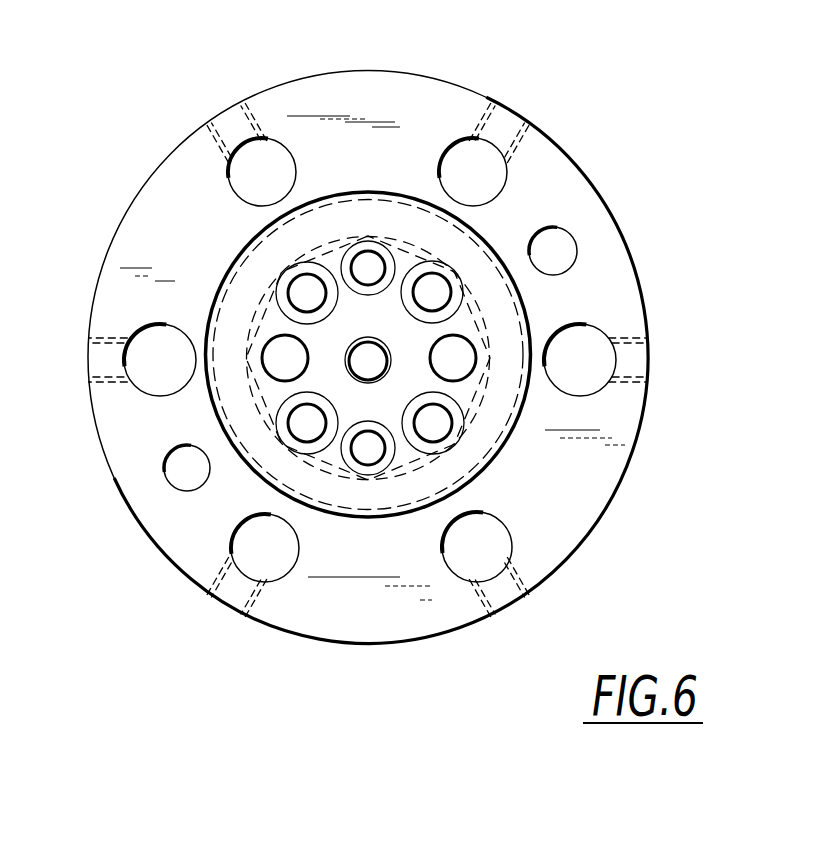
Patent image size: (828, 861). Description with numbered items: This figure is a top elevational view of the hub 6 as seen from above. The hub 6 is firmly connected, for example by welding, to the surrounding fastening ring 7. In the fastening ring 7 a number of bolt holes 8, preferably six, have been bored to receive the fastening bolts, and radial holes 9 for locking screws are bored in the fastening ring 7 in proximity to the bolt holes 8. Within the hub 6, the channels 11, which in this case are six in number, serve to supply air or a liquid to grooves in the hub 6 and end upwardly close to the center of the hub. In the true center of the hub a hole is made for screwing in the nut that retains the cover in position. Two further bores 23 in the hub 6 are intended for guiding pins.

The hub 6 is at (343, 210).
The fastening ring 7 is at (587, 505).
The bolt holes 8 is at (243, 178).
The radial holes 9 is at (233, 127).
The channels 11 is at (437, 432).
The bores 23 is at (277, 367).